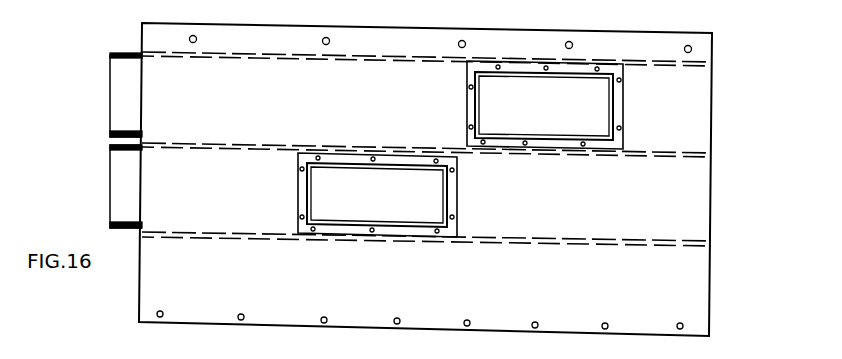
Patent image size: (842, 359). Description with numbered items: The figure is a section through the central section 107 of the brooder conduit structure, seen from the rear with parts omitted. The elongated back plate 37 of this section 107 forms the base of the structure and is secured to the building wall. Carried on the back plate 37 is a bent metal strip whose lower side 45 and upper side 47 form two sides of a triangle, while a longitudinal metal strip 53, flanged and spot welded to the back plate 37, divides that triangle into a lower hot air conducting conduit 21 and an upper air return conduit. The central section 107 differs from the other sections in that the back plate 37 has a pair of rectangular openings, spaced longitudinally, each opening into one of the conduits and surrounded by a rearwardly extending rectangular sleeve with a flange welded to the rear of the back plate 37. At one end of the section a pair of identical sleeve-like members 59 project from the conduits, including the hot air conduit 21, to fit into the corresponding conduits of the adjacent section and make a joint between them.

The back plate 37 is at (247, 26).
The central section 107 is at (551, 27).
The upper side 47 is at (202, 56).
The metal strip 53 is at (238, 144).
The lower side 45 is at (186, 232).
The sleeve-like member 59 is at (109, 97).
The hot air conducting conduit 21 is at (372, 195).